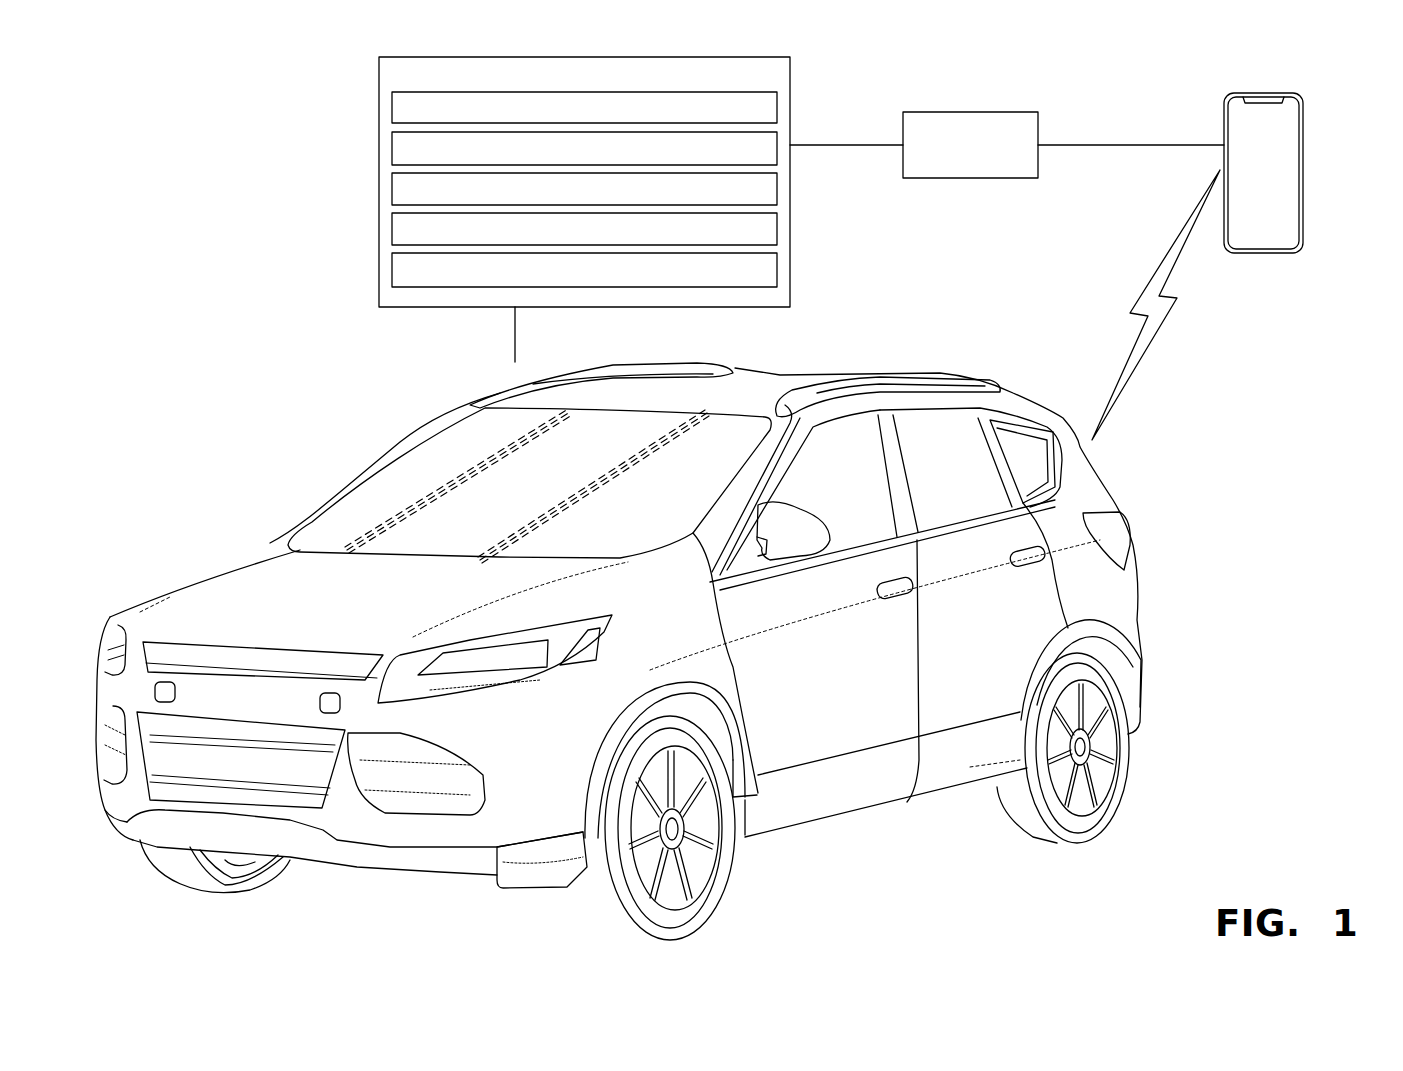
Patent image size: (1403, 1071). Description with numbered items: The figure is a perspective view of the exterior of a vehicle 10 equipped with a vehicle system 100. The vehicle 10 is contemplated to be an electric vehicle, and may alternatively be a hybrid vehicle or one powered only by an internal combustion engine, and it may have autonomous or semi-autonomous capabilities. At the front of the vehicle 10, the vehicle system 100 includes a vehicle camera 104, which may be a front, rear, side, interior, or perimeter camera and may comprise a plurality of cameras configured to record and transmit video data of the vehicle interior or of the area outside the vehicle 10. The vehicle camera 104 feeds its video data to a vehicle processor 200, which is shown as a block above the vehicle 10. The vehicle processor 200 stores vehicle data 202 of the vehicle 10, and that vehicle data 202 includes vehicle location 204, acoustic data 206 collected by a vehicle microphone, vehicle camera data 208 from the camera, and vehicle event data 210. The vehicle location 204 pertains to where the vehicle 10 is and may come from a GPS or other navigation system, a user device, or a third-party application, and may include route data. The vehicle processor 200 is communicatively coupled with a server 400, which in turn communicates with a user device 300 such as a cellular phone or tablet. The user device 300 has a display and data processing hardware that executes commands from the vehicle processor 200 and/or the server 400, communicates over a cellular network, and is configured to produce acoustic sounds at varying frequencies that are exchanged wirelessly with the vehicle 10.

The vehicle 10 is at (958, 313).
The vehicle system 100 is at (1348, 152).
The vehicle camera 104 is at (320, 697).
The vehicle processor 200 is at (584, 182).
The vehicle data 202 is at (584, 107).
The vehicle location 204 is at (584, 148).
The acoustic data 206 is at (584, 189).
The vehicle camera data 208 is at (584, 229).
The vehicle event data 210 is at (584, 270).
The user device 300 is at (1262, 254).
The server 400 is at (970, 145).